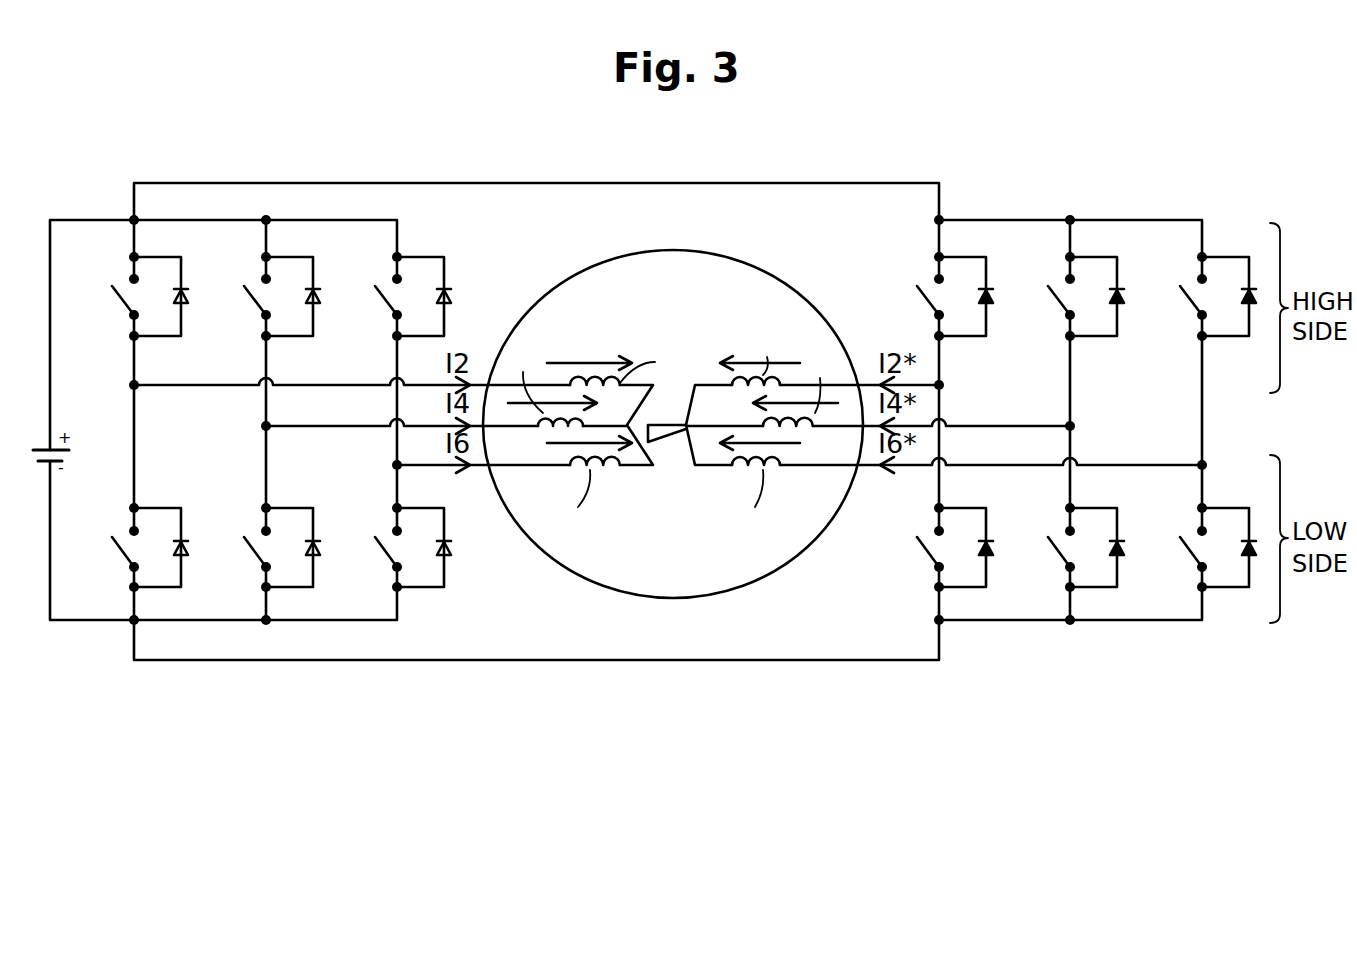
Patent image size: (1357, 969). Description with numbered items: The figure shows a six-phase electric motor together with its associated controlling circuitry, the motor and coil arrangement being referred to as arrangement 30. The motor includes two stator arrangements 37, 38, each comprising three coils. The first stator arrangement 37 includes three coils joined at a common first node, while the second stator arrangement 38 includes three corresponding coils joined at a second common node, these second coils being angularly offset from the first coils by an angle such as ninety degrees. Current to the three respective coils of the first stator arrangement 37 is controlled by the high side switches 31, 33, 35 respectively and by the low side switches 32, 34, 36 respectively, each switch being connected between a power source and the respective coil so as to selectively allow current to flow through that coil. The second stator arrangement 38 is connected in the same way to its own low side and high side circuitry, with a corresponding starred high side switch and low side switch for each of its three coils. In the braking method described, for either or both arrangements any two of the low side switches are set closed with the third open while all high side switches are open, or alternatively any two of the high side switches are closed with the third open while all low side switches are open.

The 6-phase motor arrangement 30 is at (790, 562).
The high side switch 31 is at (158, 328).
The low side switch 32 is at (160, 522).
The high side switch 33 is at (289, 328).
The low side switch 34 is at (296, 522).
The high side switch 35 is at (422, 265).
The low side switch 36 is at (416, 572).
The first stator arrangement 37 is at (652, 340).
The second stator arrangement 38 is at (822, 340).